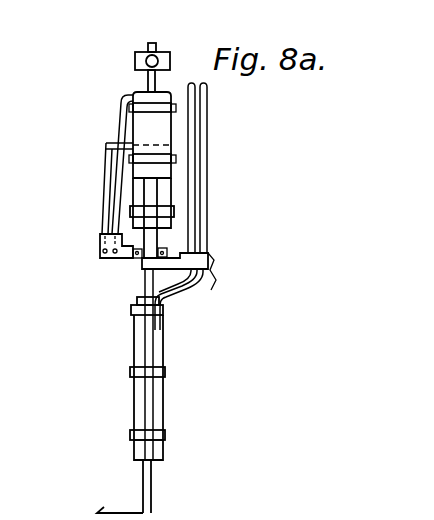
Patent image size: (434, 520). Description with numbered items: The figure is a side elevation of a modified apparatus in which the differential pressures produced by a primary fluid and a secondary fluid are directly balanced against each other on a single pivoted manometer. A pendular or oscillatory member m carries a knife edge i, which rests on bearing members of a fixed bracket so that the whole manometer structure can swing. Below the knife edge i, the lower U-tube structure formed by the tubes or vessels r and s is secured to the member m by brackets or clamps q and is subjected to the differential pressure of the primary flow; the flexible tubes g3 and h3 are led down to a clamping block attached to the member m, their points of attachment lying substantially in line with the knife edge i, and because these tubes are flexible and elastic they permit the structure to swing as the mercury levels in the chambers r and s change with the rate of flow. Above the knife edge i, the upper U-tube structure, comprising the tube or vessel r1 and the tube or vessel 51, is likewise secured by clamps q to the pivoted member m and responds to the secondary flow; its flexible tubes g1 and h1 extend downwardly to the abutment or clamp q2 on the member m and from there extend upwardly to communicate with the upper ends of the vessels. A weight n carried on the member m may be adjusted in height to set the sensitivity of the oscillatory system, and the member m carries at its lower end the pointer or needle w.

The weight n is at (140, 55).
The tube or vessel 51 is at (132, 128).
The brackets or clamps q is at (176, 106).
The flexible tube h1 is at (121, 118).
The flexible tube g1 is at (243, 260).
The tube or vessel r1 is at (136, 191).
The pendular or oscillatory member m is at (158, 186).
The abutment or clamp q2 is at (100, 245).
The knife edge i is at (134, 256).
The manometer chamber r is at (137, 299).
The manometer chamber s is at (165, 411).
The pointer or needle w is at (100, 512).
The flexible tube h3 is at (204, 138).
The flexible tube g3 is at (160, 220).